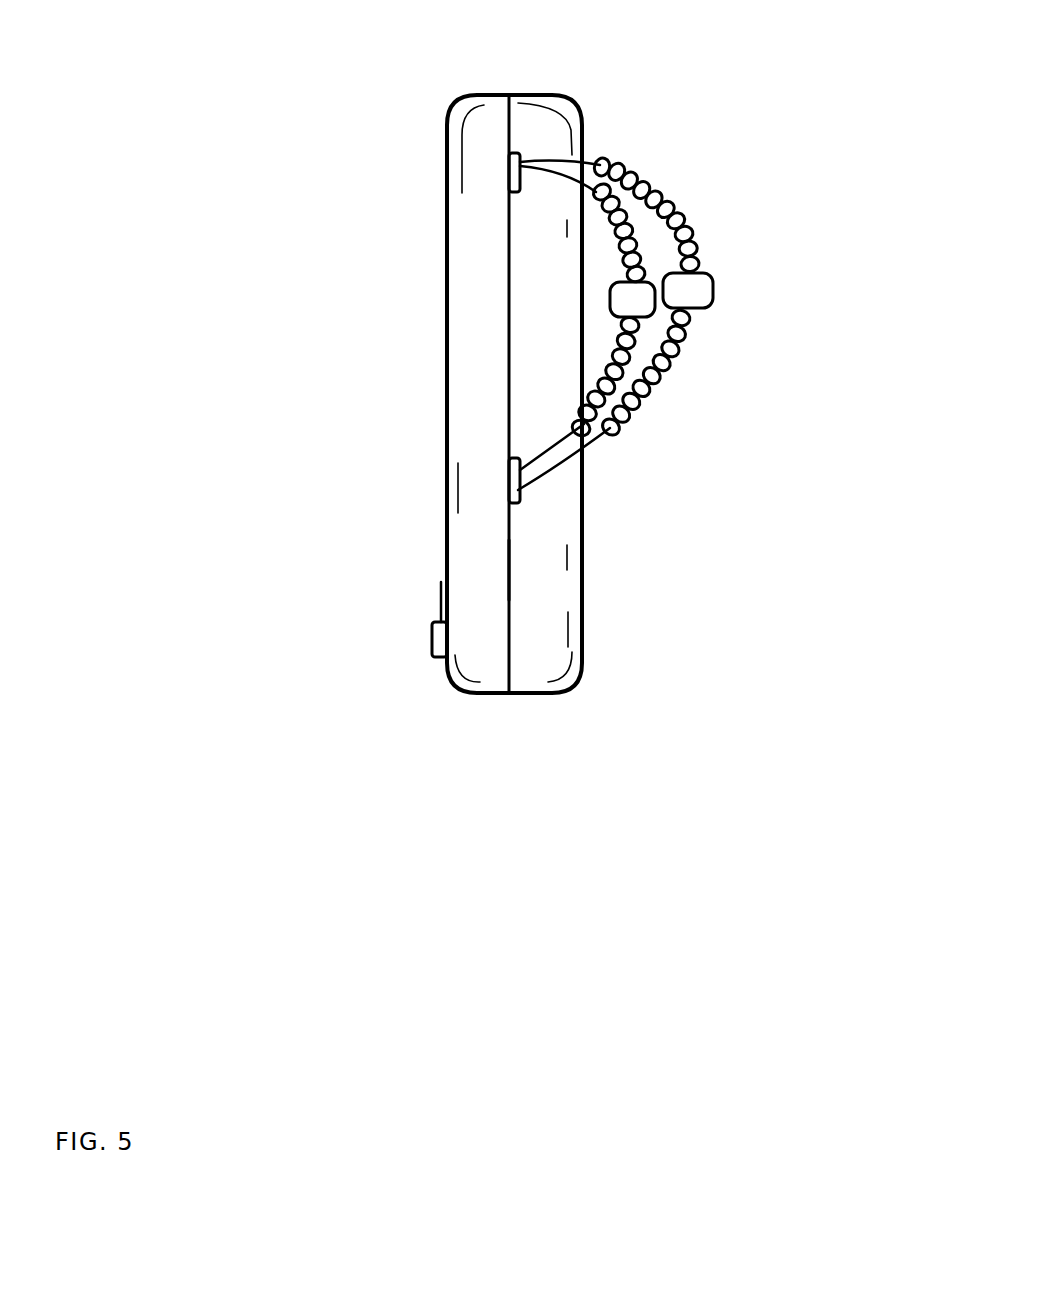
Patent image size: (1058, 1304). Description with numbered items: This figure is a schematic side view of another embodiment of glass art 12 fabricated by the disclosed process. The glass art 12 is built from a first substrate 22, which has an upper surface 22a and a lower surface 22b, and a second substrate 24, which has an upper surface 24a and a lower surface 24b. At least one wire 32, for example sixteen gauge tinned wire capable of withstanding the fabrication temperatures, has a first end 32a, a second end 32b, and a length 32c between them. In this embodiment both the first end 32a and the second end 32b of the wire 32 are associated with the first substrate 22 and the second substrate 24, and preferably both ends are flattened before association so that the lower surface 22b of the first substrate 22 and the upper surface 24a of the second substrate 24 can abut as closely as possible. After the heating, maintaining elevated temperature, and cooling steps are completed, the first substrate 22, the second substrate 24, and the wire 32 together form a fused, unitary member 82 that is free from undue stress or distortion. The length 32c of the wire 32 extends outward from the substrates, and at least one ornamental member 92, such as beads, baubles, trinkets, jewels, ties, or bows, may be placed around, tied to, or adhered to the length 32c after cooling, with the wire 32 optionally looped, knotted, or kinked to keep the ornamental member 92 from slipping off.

The glass art 12 is at (370, 743).
The first substrate 22 is at (473, 212).
The upper surface of first substrate 22a is at (447, 279).
The lower surface of first substrate 22b is at (509, 343).
The second substrate 24 is at (550, 512).
The upper surface of second substrate 24a is at (513, 572).
The lower surface of second substrate 24b is at (582, 614).
The wire 32 is at (698, 264).
The first end of wire 32a is at (527, 155).
The second end of wire 32b is at (520, 463).
The length of wire 32c is at (742, 232).
The fused unitary member 82 is at (507, 720).
The ornamental member 92 is at (663, 193).